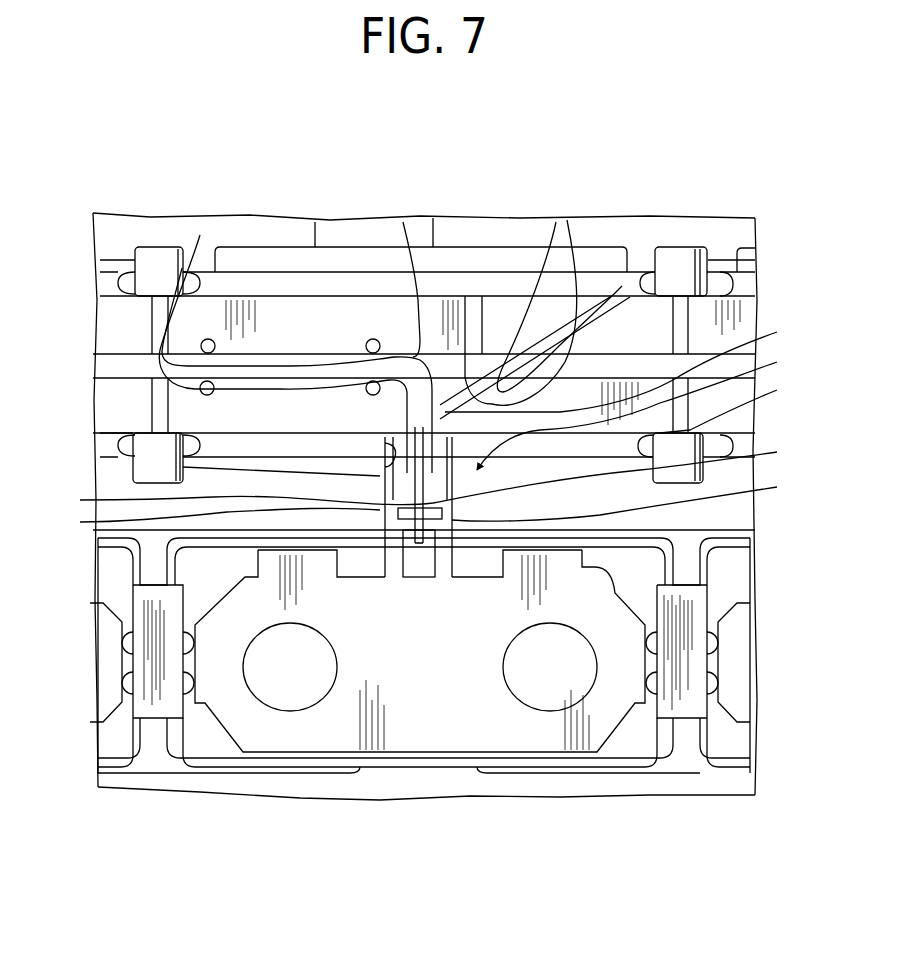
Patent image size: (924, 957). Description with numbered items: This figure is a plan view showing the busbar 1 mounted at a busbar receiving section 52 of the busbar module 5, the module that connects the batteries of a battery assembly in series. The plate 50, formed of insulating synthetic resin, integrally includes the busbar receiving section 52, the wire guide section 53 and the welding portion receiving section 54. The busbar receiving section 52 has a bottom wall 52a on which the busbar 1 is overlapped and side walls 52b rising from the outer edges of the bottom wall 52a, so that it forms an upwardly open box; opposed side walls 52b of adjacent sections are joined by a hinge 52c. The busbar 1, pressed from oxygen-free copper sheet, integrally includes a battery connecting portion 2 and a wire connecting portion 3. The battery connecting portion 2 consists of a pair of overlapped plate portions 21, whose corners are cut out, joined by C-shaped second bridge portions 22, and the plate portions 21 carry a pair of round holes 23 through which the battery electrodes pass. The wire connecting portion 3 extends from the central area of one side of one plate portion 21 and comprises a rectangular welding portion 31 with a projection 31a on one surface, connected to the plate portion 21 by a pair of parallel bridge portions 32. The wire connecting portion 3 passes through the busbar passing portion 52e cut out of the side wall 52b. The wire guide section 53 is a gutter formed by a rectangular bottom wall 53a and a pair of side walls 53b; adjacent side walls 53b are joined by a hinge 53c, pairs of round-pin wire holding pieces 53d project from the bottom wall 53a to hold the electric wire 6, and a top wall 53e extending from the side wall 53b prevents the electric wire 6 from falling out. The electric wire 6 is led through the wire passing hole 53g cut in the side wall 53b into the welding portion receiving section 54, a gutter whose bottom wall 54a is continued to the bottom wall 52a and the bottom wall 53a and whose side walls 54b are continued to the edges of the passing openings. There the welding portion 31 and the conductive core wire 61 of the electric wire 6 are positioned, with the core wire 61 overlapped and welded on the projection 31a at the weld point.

The busbar module 5 is at (753, 150).
The plate 50 is at (760, 272).
The hinge 53c is at (130, 261).
The electric wire 6 is at (132, 343).
The wire guide section 53 is at (247, 267).
The wire holding piece 53d is at (200, 235).
The bottom wall 53a is at (288, 320).
The side wall 53b is at (340, 290).
The top wall 53e is at (516, 317).
The wire passing hole 53g is at (133, 466).
The core wire 61 is at (567, 220).
The welding portion receiving section 54 is at (731, 406).
The bottom wall 54a is at (631, 363).
The side wall 54b is at (72, 498).
The projection 31a is at (455, 492).
The welding portion 31 is at (441, 499).
The wire connecting portion 3 is at (458, 560).
The busbar passing portion 52e is at (93, 530).
The busbar receiving section 52 is at (280, 778).
The bottom wall 52a is at (208, 748).
The side wall 52b is at (160, 570).
The hinge 52c is at (258, 563).
The second bridge portion 22 is at (122, 624).
The hole 23 is at (290, 708).
The bridge portion 32 is at (392, 567).
The plate portion 21 is at (378, 700).
The battery connecting portion 2 is at (325, 742).
The busbar 1 is at (235, 742).